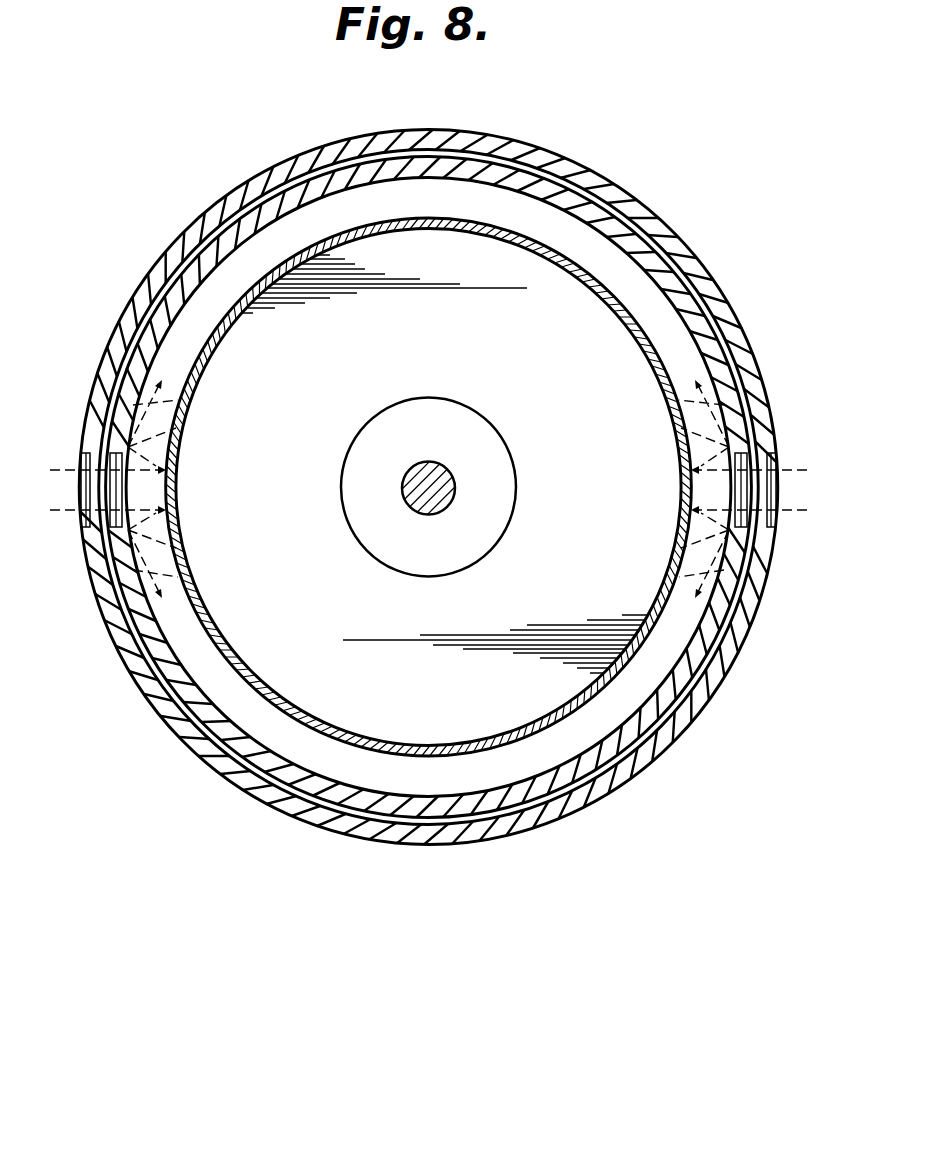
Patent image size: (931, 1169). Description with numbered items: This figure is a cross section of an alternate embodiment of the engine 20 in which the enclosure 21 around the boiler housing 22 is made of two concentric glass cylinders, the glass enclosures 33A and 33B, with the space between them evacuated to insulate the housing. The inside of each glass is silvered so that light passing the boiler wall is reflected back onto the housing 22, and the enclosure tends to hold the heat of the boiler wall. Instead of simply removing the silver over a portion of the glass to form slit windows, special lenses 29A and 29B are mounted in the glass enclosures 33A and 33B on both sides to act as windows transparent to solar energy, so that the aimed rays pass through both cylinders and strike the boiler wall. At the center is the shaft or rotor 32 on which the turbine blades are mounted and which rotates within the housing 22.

The engine 20 is at (566, 146).
The enclosure 21 is at (215, 770).
The housing 22 is at (307, 243).
The special lens 29A is at (82, 456).
The special lens 29B is at (752, 452).
The shaft or rotor 32 is at (422, 496).
The glass enclosure 33A is at (570, 807).
The glass enclosure 33B is at (407, 802).